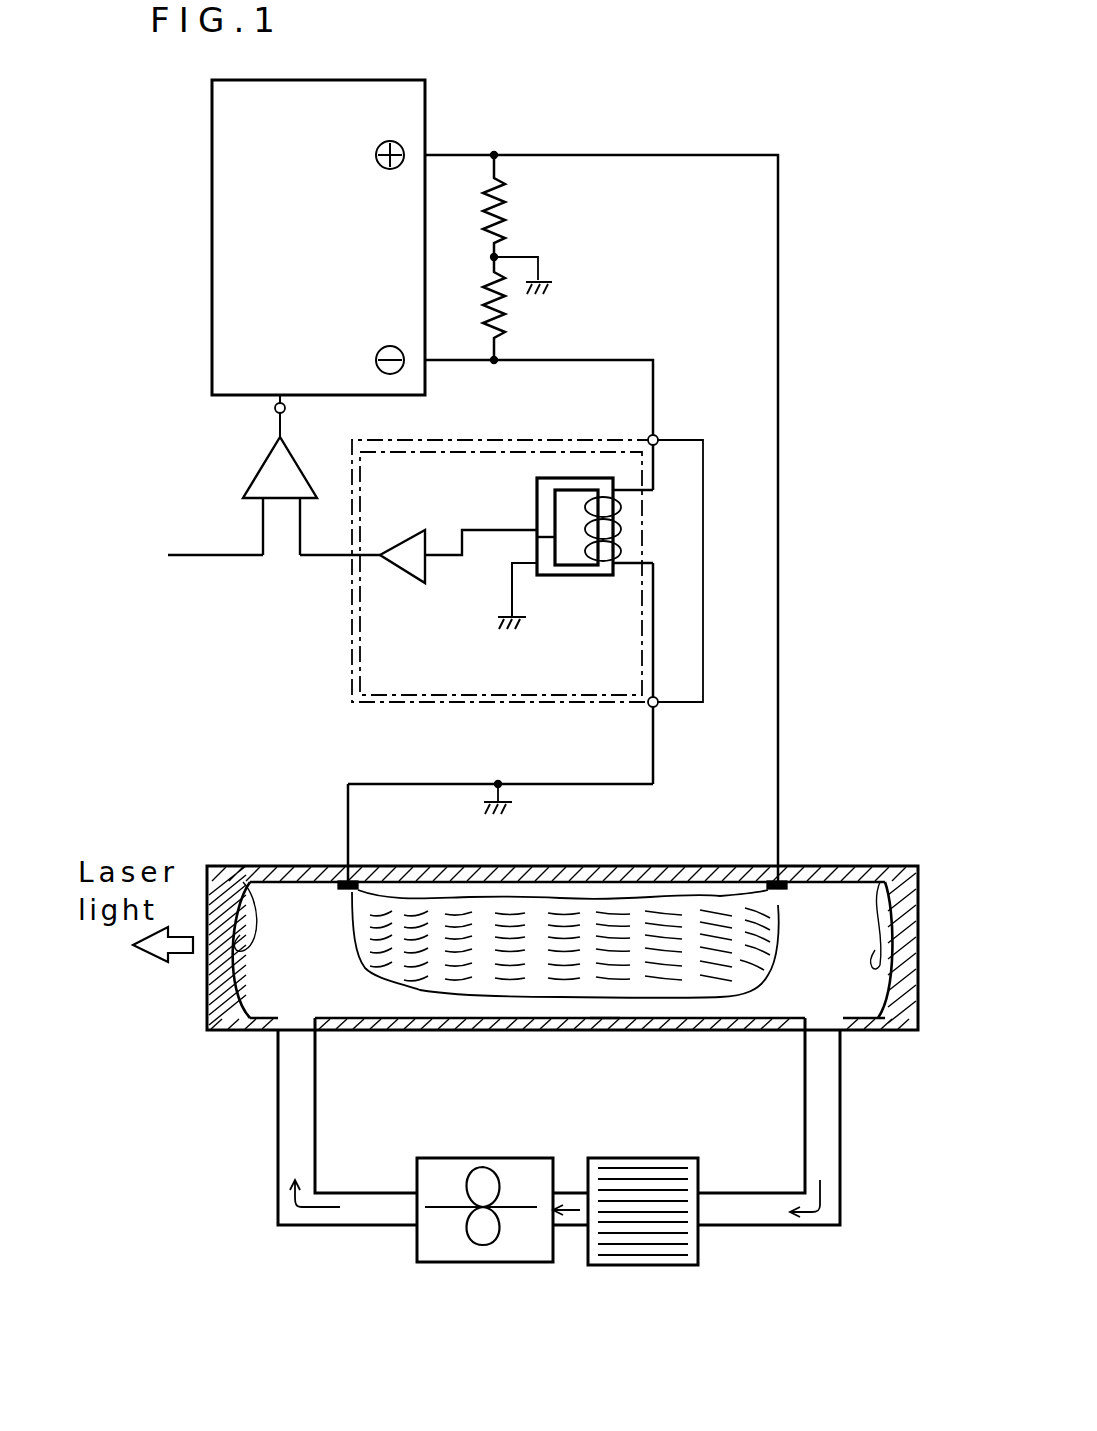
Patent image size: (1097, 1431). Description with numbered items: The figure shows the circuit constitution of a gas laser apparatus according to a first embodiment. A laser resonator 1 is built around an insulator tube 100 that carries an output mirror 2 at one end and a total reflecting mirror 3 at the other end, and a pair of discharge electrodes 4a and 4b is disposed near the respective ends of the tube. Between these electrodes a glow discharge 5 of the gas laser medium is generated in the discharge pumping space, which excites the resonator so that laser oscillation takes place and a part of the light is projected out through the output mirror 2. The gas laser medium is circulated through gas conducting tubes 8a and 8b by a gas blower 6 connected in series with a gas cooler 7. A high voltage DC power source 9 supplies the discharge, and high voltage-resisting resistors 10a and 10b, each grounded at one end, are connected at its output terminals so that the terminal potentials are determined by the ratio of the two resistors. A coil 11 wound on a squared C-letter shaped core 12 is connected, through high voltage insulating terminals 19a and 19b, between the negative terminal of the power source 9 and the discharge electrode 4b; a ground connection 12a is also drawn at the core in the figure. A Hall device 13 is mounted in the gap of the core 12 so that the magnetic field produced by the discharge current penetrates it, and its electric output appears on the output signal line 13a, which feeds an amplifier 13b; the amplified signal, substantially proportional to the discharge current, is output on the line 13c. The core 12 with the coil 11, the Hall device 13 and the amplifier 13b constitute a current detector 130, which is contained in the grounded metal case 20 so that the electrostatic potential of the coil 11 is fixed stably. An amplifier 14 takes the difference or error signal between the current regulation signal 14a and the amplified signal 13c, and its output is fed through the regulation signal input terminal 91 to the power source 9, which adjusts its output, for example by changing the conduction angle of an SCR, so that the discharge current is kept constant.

The laser resonator 1 is at (675, 862).
The output mirror 2 is at (232, 866).
The total reflecting mirror 3 is at (898, 870).
The discharge electrode 4a is at (780, 880).
The discharge electrode 4b is at (355, 878).
The glow discharge 5 is at (565, 998).
The gas blower 6 is at (487, 1158).
The gas cooler 7 is at (638, 1158).
The gas conducting tube 8a is at (315, 1130).
The gas conducting tube 8b is at (805, 1170).
The high voltage DC power source 9 is at (212, 176).
The regulation signal input terminal 91 is at (275, 410).
The high voltage-resisting resistor 10a is at (505, 210).
The high voltage-resisting resistor 10b is at (505, 312).
The coil 11 is at (588, 563).
The core 12 is at (560, 478).
The ground connection 12a is at (512, 588).
The Hall device 13 is at (545, 527).
The output signal line 13a is at (460, 568).
The amplifier 13b is at (410, 540).
The line 13c is at (300, 562).
The amplifier 14 is at (258, 463).
The current regulation signal 14a is at (203, 558).
The high voltage insulating terminal 19a is at (657, 436).
The high voltage insulating terminal 19b is at (658, 706).
The metal case 20 is at (378, 708).
The insulator tube 100 is at (600, 1024).
The current detector 130 is at (640, 652).